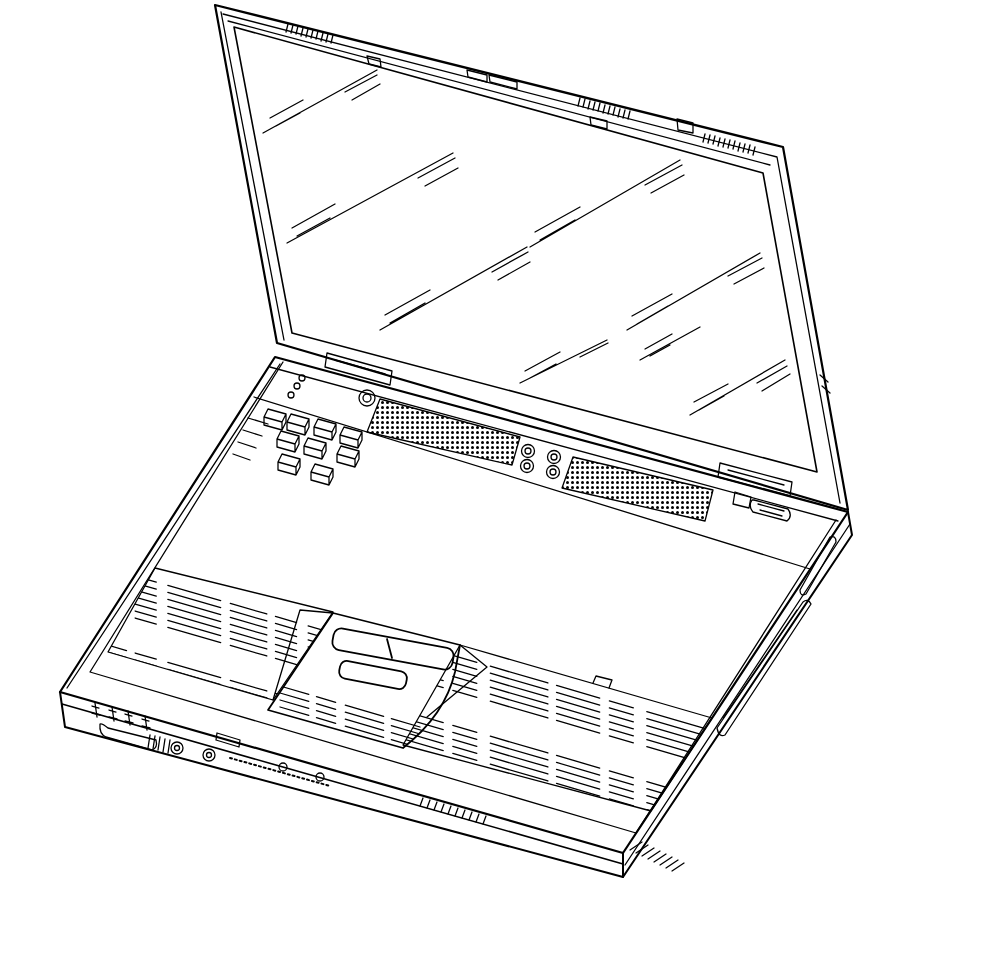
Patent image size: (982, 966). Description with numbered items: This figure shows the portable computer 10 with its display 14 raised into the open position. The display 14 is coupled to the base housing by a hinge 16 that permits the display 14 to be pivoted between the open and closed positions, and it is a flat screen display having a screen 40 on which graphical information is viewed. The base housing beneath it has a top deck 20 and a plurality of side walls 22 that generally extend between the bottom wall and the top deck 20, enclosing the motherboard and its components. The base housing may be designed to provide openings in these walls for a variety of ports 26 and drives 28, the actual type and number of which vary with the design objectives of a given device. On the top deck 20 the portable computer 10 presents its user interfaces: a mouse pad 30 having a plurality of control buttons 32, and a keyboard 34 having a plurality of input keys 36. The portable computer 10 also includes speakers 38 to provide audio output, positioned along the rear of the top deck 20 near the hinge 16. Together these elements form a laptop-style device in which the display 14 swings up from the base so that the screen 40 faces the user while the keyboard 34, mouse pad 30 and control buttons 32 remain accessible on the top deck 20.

The portable computer 10 is at (838, 353).
The display 14 is at (803, 270).
The hinge 16 is at (377, 370).
The top deck 20 is at (663, 820).
The side walls 22 is at (118, 595).
The ports 26 is at (178, 748).
The drives 28 is at (770, 653).
The mouse pad 30 is at (330, 727).
The control buttons 32 is at (365, 670).
The keyboard 34 is at (745, 575).
The input keys 36 is at (300, 477).
The speakers 38 is at (448, 440).
The screen 40 is at (738, 205).